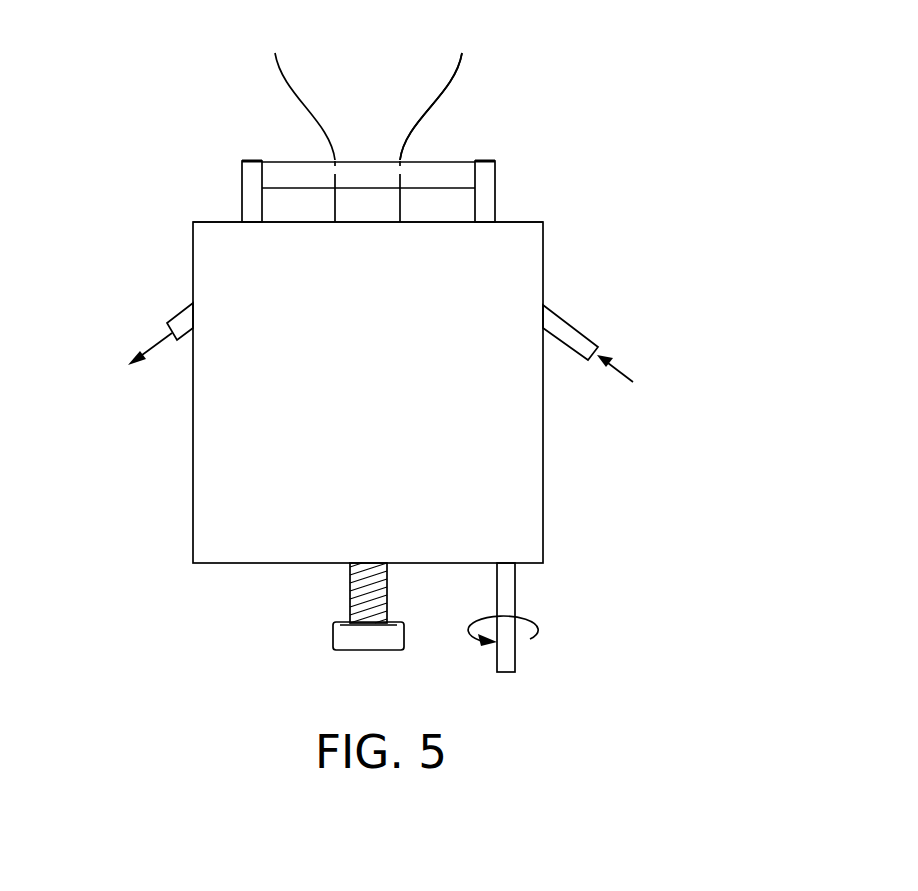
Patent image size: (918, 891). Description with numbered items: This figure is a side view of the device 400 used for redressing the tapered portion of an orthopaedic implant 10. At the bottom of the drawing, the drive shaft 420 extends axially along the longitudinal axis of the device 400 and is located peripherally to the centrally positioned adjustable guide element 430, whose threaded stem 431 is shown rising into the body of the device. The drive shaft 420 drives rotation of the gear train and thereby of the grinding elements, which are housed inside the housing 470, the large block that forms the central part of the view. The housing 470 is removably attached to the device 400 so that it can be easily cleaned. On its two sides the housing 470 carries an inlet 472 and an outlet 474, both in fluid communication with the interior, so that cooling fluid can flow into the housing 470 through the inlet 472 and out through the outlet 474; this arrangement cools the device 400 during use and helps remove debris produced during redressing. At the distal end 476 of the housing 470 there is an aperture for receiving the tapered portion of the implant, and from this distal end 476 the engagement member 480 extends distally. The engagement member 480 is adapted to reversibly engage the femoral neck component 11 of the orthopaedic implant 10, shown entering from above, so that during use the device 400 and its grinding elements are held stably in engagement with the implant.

The orthopaedic implant 10 is at (310, 35).
The femoral neck component 11 is at (407, 140).
The device 400 is at (676, 141).
The drive shaft 420 is at (515, 652).
The adjustable guide element 430 is at (333, 636).
The threaded rod 431 is at (351, 587).
The housing 470 is at (543, 527).
The inlet 472 is at (568, 322).
The outlet 474 is at (180, 316).
The distal end 476 is at (212, 220).
The engagement member 480 is at (490, 193).